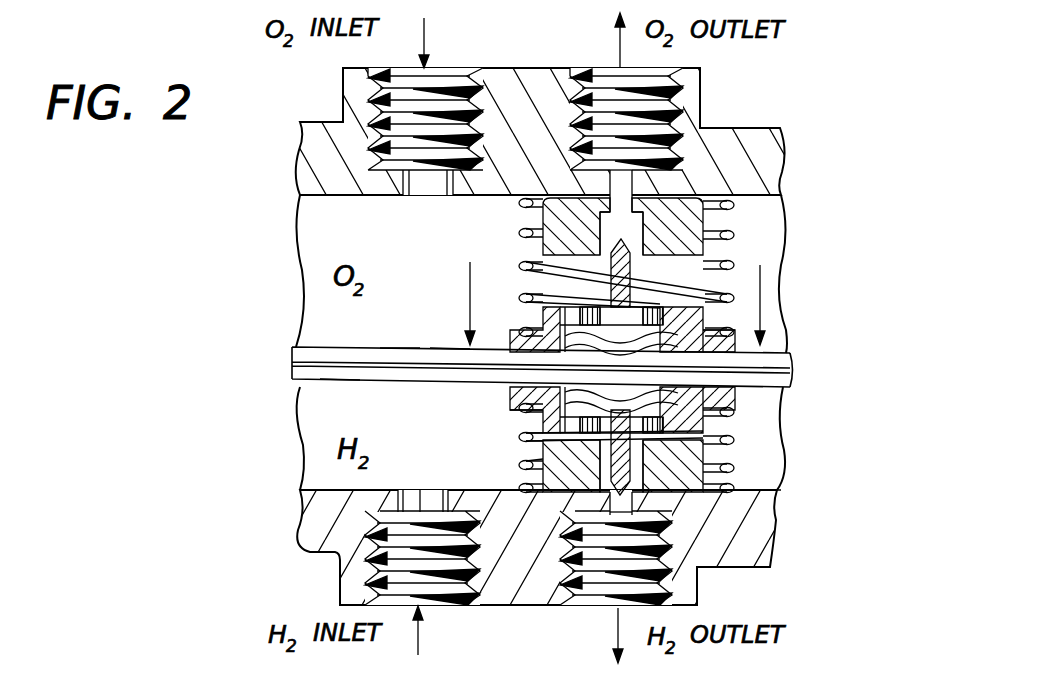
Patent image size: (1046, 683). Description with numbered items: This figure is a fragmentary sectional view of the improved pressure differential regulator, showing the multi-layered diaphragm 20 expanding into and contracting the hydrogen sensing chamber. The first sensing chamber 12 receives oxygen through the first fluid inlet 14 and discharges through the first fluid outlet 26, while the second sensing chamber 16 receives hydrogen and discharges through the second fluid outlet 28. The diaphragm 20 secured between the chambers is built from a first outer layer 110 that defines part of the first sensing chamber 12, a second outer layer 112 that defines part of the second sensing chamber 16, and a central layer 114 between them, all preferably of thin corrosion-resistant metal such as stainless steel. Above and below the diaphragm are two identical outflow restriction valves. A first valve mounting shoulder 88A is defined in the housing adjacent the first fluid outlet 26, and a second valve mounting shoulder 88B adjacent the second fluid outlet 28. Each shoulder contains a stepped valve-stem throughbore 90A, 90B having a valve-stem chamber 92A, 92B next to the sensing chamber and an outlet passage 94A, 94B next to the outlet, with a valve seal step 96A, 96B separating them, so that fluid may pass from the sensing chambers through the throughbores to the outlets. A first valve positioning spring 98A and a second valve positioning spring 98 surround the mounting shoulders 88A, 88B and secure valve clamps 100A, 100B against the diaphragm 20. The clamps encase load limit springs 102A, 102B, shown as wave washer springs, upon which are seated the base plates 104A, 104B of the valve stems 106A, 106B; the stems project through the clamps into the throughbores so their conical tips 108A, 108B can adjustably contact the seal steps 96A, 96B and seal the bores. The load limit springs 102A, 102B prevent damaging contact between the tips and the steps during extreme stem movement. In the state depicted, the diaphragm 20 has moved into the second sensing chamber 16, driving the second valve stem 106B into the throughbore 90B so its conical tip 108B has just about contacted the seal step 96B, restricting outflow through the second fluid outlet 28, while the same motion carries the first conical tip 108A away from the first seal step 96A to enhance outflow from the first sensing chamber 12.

The first sensing chamber 12 is at (541, 274).
The first fluid inlet 14 is at (445, 60).
The second sensing chamber 16 is at (541, 438).
The multi-layered diaphragm 20 is at (280, 352).
The first fluid outlet 26 is at (603, 60).
The second fluid outlet 28 is at (601, 620).
The first valve mounting shoulder 88A is at (706, 258).
The second valve mounting shoulder 88B is at (706, 468).
The first stepped valve-stem throughbore 90A is at (644, 192).
The second stepped valve-stem throughbore 90B is at (590, 458).
The first valve-stem chamber 92A is at (603, 216).
The second valve-stem chamber 92B is at (645, 456).
The first outlet passage 94A is at (603, 183).
The second outlet passage 94B is at (642, 501).
The first valve seal step 96A is at (636, 218).
The second valve seal step 96B is at (600, 500).
The valve positioning spring 98 is at (519, 468).
The first valve positioning spring 98A is at (519, 205).
The first valve clamp 100A is at (545, 302).
The second valve clamp 100B is at (706, 440).
The first load limit spring 102A is at (790, 352).
The second load limit spring 102B is at (790, 382).
The first base plate 104A is at (735, 298).
The second base plate 104B is at (519, 410).
The first valve stem 106A is at (690, 288).
The second valve stem 106B is at (519, 440).
The first conical tip 108A is at (519, 234).
The second conical tip 108B is at (706, 490).
The first outer layer 110 is at (390, 347).
The second outer layer 112 is at (325, 384).
The central layer 114 is at (446, 348).